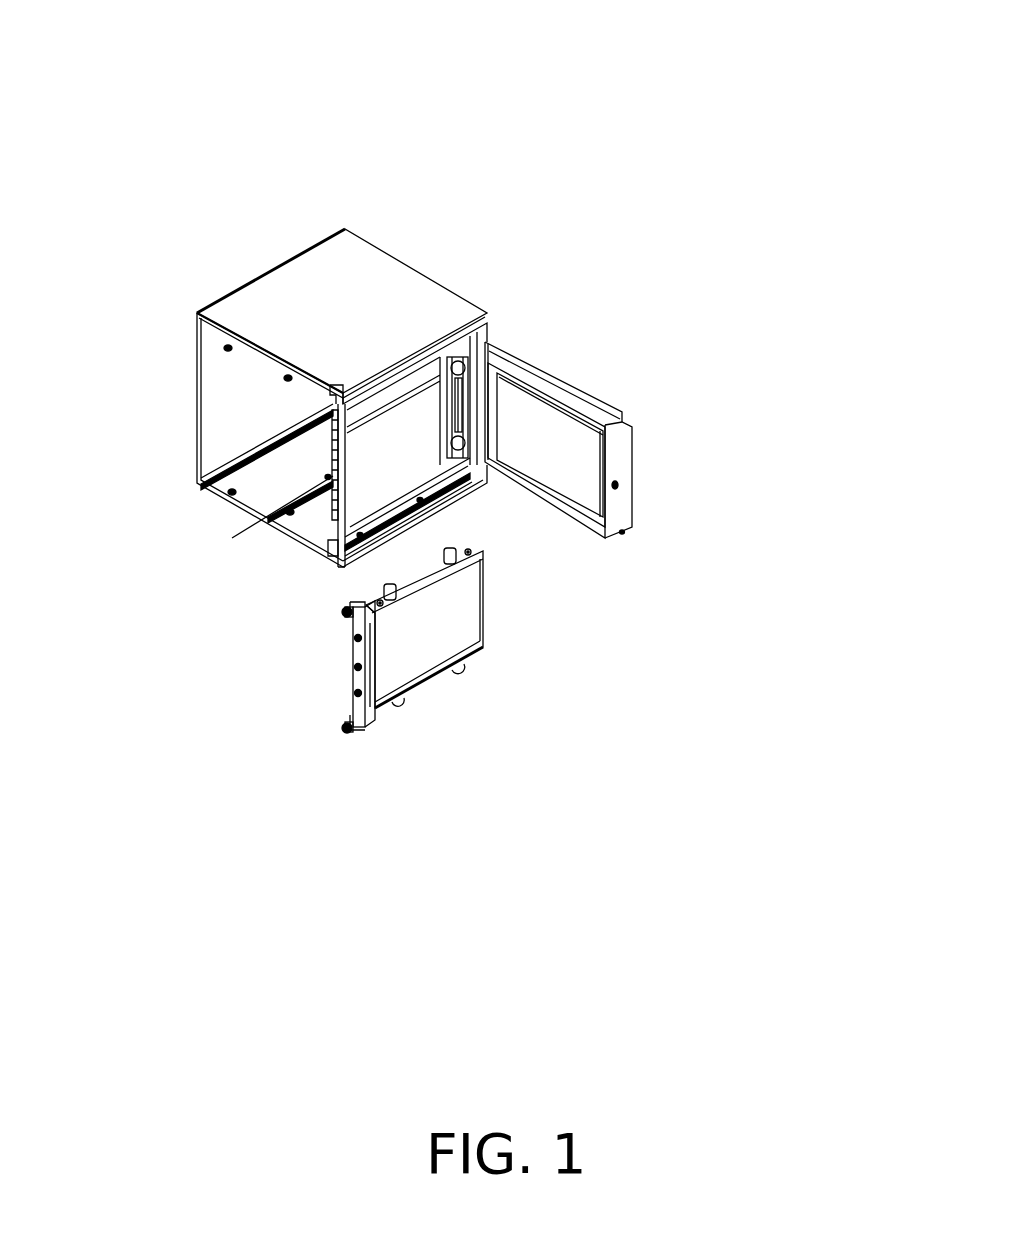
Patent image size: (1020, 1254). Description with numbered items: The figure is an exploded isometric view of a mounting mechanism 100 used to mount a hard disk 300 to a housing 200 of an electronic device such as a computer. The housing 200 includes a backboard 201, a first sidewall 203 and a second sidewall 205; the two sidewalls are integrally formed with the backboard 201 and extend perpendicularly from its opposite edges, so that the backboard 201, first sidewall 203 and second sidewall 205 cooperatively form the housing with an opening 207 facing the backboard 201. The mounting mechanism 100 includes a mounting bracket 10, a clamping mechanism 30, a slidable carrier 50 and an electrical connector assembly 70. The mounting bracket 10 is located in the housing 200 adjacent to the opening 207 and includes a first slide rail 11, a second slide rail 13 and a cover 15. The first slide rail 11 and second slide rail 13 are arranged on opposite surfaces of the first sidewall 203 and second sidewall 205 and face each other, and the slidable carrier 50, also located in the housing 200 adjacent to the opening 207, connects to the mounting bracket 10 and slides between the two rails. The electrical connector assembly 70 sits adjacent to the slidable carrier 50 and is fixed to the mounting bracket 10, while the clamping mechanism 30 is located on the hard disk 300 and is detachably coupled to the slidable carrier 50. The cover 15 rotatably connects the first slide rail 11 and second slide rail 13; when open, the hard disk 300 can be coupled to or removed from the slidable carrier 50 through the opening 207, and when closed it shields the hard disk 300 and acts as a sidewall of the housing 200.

The mounting mechanism 100 is at (522, 33).
The housing 200 is at (237, 282).
The first sidewall 203 is at (370, 255).
The backboard 201 is at (220, 383).
The opening 207 is at (250, 443).
The second sidewall 205 is at (257, 497).
The electrical connector assembly 70 is at (336, 455).
The slidable carrier 50 is at (322, 535).
The mounting bracket 10 is at (726, 378).
The first slide rail 11 is at (465, 342).
The cover 15 is at (590, 410).
The second slide rail 13 is at (455, 480).
The clamping mechanism 30 is at (437, 580).
The hard disk 300 is at (443, 635).